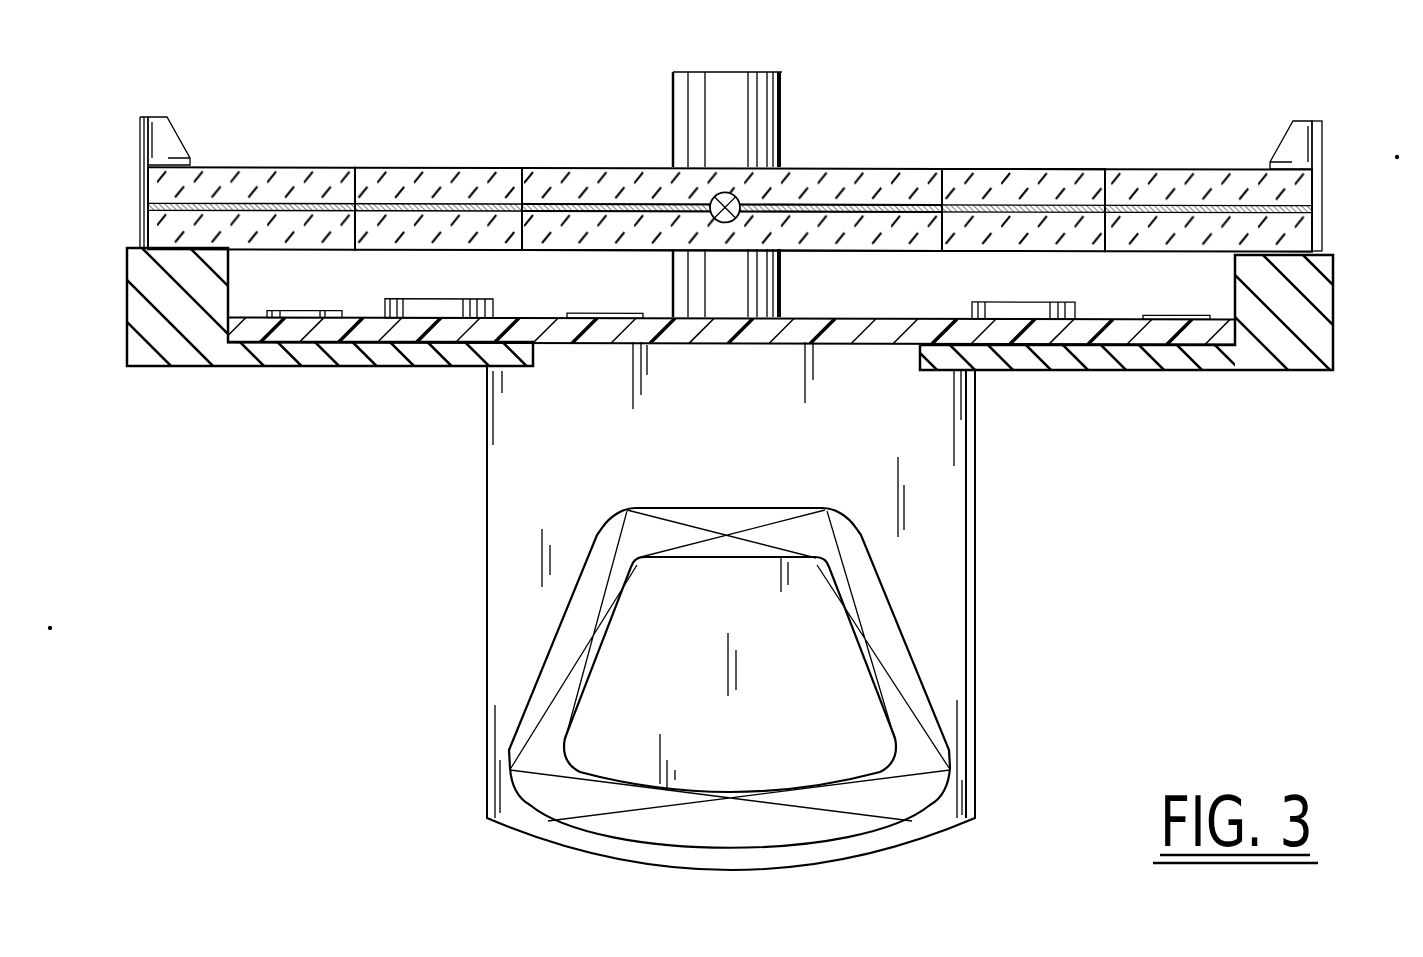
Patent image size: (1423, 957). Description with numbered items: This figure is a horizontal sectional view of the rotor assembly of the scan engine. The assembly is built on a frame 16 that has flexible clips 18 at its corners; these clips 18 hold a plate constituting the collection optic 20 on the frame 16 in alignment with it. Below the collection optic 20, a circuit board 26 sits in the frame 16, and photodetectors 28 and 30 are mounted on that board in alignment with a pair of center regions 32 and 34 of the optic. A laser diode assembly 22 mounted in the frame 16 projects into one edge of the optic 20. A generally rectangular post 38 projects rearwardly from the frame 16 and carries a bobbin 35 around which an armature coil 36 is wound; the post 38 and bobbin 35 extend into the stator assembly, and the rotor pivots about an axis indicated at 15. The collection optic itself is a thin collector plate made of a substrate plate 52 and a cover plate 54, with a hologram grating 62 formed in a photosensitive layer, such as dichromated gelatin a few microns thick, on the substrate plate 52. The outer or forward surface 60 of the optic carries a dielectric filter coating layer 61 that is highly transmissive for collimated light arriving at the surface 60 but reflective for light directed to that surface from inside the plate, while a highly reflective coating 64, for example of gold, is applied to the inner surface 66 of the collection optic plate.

The pivot axis 15 is at (740, 189).
The frame 16 is at (1333, 338).
The flexible clips 18 is at (143, 117).
The collection optic 20 is at (1187, 168).
The laser diode assembly 22 is at (763, 112).
The circuit board 26 is at (317, 344).
The photodetector 28 is at (470, 298).
The photodetector 30 is at (1053, 300).
The center region 32 is at (433, 167).
The center region 34 is at (1043, 168).
The bobbin 35 is at (816, 740).
The armature coil 36 is at (923, 698).
The post 38 is at (955, 501).
The substrate plate 52 is at (1300, 232).
The cover plate 54 is at (967, 168).
The outer surface 60 is at (568, 126).
The dielectric filter coating layer 61 is at (305, 167).
The hologram grating 62 is at (617, 200).
The reflective coating 64 is at (647, 251).
The inner surface 66 is at (928, 251).